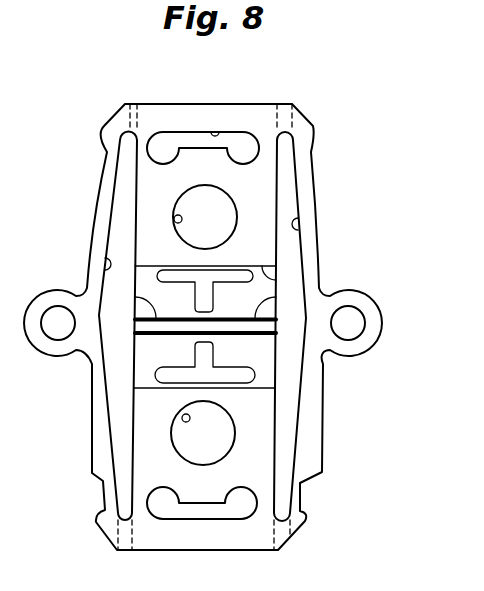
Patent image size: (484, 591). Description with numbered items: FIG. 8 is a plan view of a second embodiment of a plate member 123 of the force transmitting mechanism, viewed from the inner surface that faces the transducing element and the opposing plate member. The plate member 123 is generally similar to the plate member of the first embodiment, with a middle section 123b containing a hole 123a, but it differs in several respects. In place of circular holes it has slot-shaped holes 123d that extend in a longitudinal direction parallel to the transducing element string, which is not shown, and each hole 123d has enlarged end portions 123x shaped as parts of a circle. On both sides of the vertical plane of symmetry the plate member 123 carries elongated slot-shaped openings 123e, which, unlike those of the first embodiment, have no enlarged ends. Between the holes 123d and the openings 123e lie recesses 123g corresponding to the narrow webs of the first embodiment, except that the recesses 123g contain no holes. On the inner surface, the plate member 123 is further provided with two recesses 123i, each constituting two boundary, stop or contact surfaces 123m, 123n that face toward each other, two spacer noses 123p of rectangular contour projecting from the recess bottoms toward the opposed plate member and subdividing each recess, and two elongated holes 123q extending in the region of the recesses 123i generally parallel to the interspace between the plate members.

The plate member 123 is at (90, 212).
The hole 123a is at (175, 214).
The middle section 123b is at (150, 180).
The slot-shaped hole 123d is at (219, 130).
The slot-shaped opening 123e is at (103, 262).
The recess 123g is at (124, 103).
The recess 123i is at (88, 287).
The boundary surface 123m is at (278, 278).
The boundary surface 123n is at (270, 305).
The spacer nose 123p is at (214, 300).
The hole 123q is at (187, 278).
The enlarged end portion 123x is at (170, 155).